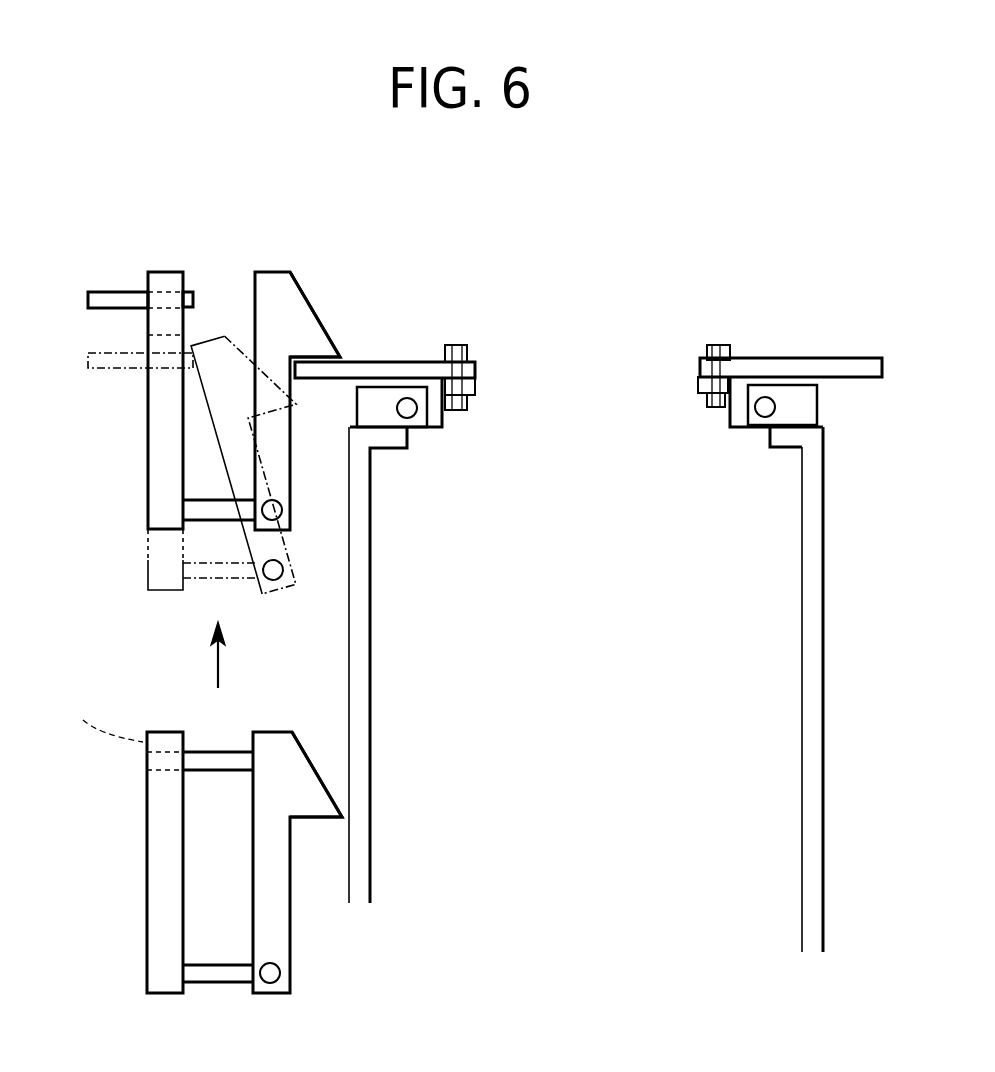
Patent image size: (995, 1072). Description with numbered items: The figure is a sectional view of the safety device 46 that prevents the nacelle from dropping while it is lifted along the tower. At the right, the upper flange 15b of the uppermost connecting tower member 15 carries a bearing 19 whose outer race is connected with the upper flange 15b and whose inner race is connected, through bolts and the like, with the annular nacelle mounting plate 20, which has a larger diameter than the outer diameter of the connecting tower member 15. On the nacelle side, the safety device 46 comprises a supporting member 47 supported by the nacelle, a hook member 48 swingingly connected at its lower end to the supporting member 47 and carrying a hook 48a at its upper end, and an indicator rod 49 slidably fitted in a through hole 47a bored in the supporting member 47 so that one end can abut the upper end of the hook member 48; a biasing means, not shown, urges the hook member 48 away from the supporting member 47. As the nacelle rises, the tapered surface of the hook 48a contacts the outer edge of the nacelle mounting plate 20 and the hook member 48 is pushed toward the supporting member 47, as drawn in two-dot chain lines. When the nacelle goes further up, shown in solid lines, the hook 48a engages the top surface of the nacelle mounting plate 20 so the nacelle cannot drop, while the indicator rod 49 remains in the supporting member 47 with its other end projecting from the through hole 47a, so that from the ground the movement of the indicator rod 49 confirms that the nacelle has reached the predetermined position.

The connecting tower member 15 is at (815, 557).
The upper flange 15b is at (783, 437).
The bearing 19 is at (808, 408).
The nacelle mounting plate 20 is at (390, 367).
The safety device 46 is at (140, 433).
The supporting member 47 is at (157, 563).
The through hole 47a is at (98, 714).
The hook member 48 is at (280, 465).
The hook 48a is at (222, 347).
The indicator rod 49 is at (113, 297).